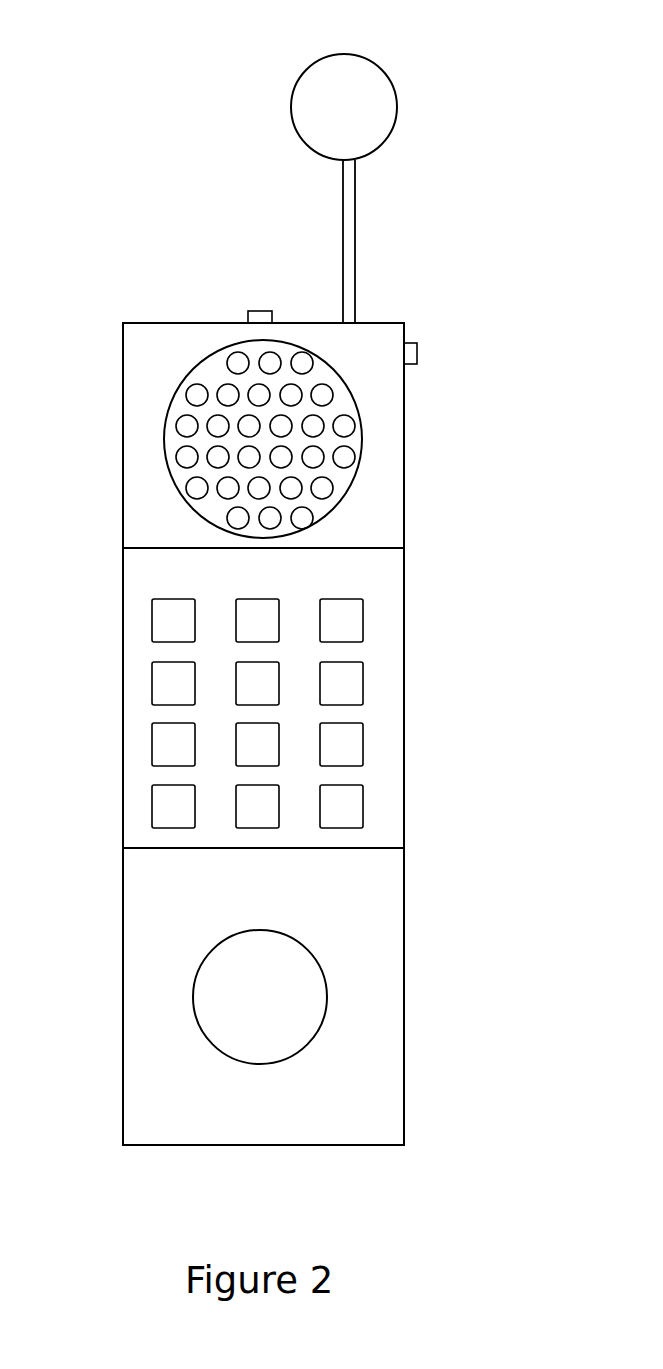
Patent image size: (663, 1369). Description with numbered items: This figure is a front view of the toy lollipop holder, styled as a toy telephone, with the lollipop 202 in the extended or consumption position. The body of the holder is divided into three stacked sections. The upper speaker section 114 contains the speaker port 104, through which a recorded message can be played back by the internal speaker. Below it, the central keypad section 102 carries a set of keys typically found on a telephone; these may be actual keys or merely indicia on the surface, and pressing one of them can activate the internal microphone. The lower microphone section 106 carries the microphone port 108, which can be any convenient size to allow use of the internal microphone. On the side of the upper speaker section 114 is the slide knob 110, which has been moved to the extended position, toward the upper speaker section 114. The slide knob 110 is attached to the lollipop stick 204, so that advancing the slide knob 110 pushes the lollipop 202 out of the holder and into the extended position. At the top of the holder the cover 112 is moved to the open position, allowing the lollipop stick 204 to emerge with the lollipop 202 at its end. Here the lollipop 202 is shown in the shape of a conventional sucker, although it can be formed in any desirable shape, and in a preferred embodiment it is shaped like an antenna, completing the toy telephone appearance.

The central keypad section 102 is at (132, 697).
The speaker port 104 is at (185, 500).
The lower microphone section 106 is at (122, 1037).
The microphone port 108 is at (322, 966).
The slide knob 110 is at (418, 358).
The cover 112 is at (260, 310).
The upper speaker section 114 is at (405, 522).
The lollipop 202 is at (333, 75).
The lollipop stick 204 is at (355, 263).